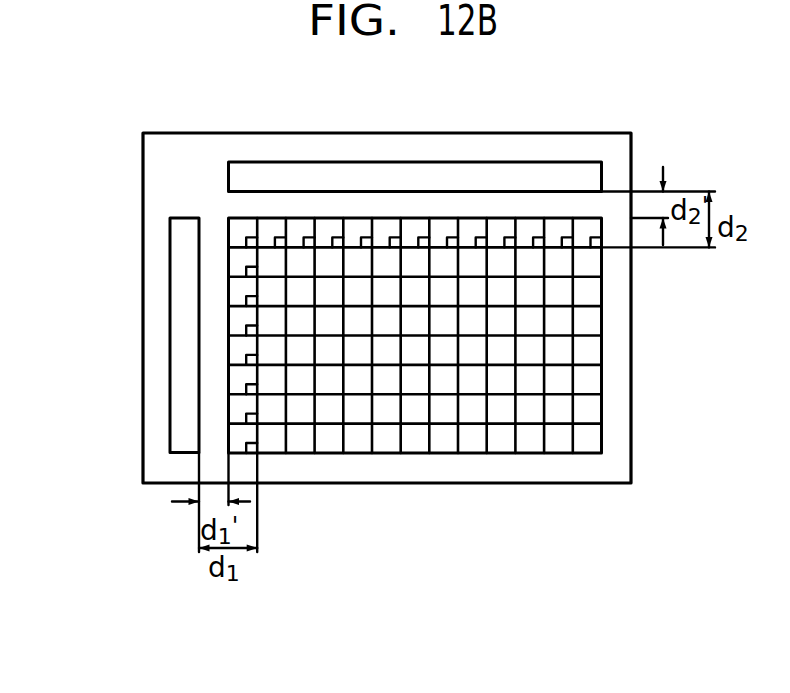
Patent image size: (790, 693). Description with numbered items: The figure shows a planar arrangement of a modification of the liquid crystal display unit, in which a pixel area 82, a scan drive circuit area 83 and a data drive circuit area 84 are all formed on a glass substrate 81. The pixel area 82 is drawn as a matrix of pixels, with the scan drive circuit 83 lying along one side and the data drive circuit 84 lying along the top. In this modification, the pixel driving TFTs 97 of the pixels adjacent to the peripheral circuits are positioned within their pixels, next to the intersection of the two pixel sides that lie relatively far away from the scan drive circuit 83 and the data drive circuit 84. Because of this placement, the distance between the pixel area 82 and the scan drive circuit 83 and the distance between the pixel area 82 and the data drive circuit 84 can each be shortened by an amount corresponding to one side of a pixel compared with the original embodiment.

The glass substrate 81 is at (462, 470).
The pixel area 82 is at (557, 443).
The scan drive circuit area 83 is at (175, 353).
The data drive circuit area 84 is at (523, 173).
The pixel driving TFT 97 is at (247, 273).